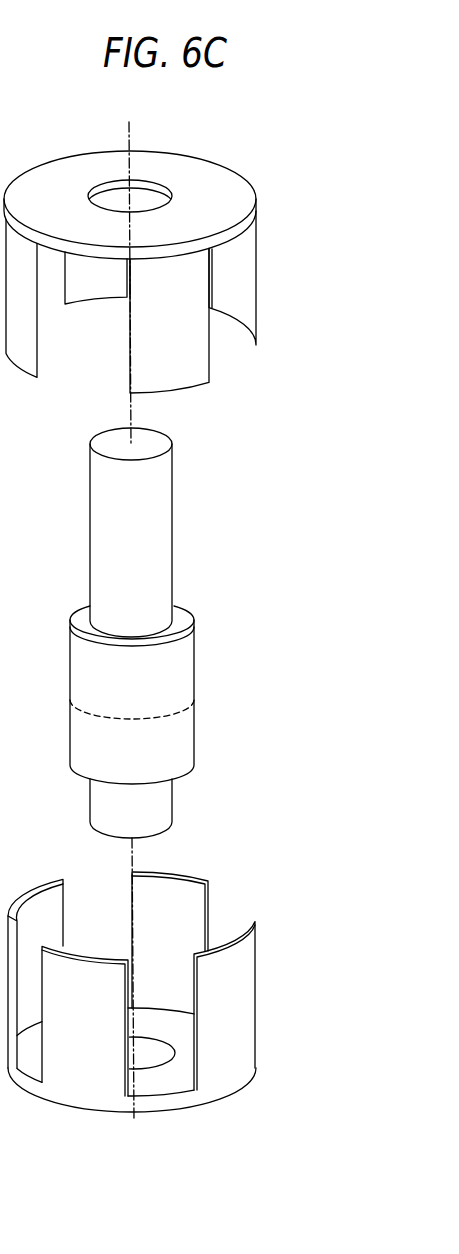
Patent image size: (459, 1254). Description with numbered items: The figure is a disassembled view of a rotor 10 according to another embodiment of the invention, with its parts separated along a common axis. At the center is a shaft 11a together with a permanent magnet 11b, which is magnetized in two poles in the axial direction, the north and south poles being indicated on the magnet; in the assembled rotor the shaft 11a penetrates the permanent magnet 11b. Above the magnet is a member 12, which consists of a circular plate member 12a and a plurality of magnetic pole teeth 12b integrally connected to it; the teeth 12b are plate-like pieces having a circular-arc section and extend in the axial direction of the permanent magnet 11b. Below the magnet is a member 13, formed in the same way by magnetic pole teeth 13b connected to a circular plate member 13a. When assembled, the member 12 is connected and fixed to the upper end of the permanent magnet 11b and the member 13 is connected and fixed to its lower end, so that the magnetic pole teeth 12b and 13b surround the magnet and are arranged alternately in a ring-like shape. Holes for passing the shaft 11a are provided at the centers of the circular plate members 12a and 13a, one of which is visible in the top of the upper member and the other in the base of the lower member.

The rotor 10 is at (283, 598).
The shaft 11a is at (157, 437).
The permanent magnet 11b is at (183, 663).
The member 12 is at (282, 180).
The circular plate member 12a is at (218, 180).
The magnetic pole teeth 12b is at (255, 291).
The member 13 is at (287, 940).
The circular plate member 13a is at (255, 1070).
The magnetic pole teeth 13b is at (52, 878).